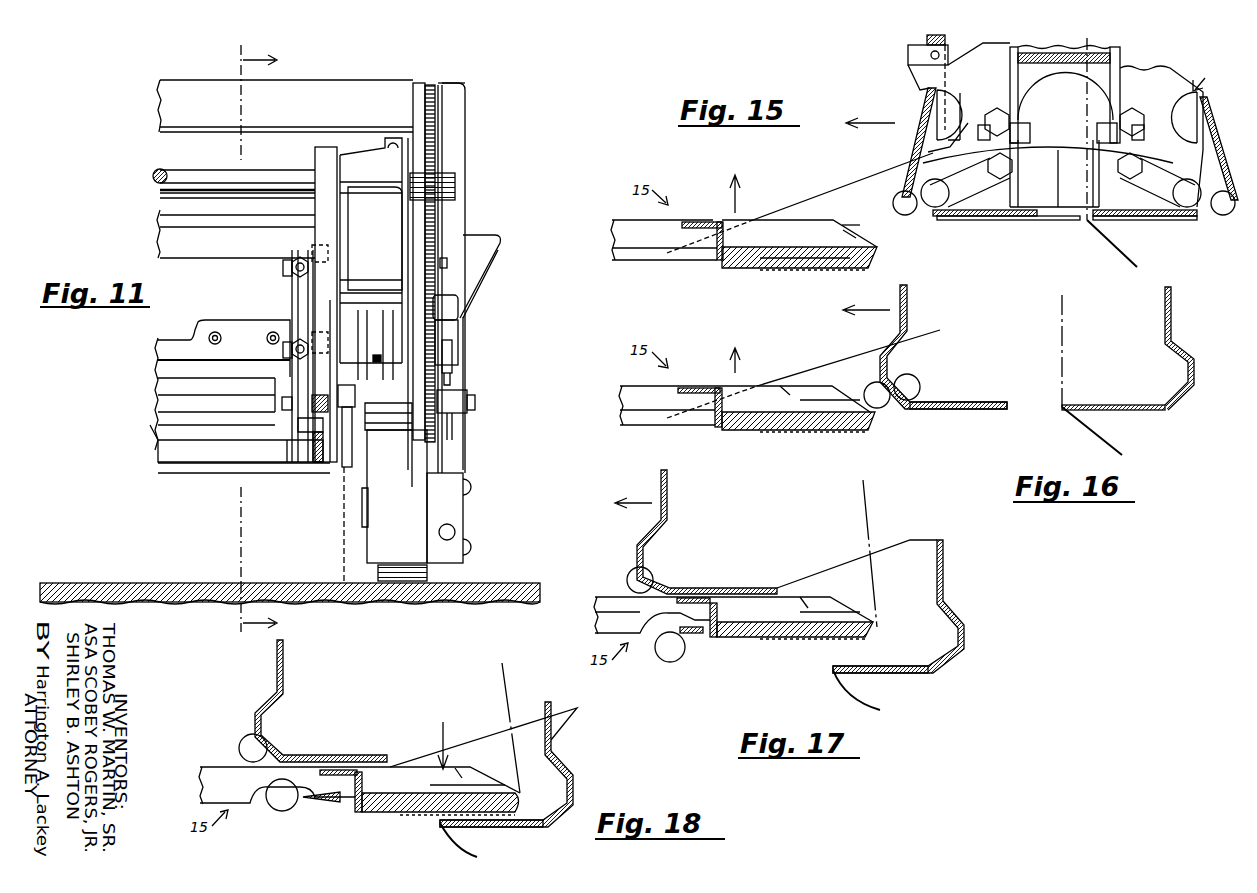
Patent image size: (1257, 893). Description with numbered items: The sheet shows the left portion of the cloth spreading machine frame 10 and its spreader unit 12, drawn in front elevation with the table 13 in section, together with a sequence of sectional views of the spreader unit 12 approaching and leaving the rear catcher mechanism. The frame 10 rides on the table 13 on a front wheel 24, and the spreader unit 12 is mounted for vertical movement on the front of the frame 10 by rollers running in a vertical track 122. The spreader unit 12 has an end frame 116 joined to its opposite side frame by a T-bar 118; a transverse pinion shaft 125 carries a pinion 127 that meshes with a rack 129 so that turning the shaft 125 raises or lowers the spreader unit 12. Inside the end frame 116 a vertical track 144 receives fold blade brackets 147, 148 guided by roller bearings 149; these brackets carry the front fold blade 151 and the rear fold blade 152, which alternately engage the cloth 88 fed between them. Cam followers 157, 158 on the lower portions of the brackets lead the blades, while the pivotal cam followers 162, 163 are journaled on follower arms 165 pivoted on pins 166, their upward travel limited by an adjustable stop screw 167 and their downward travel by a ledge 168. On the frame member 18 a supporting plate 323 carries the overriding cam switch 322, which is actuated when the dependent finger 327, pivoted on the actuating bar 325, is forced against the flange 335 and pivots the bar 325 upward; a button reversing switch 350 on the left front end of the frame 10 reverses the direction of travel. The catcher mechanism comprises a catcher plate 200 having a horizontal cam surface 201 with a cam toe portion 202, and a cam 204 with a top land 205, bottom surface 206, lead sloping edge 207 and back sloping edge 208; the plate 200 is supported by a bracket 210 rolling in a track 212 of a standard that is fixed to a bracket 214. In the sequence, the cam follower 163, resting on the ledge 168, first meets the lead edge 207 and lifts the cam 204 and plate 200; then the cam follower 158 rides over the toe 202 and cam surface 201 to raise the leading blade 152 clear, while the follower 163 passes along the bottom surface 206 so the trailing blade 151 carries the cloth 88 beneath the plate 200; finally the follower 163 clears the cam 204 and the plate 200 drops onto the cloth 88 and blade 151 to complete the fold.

In FIG. 11, the frame 10 is at (464, 125).
In FIG. 11, the spreader unit 12 is at (118, 395).
In FIG. 15, the spreader unit 12 is at (1212, 73).
In FIG. 11, the table 13 is at (100, 583).
In FIG. 11, the frame member 18 is at (455, 148).
In FIG. 11, the front wheel 24 is at (428, 574).
In FIG. 15, the cloth 88 is at (1112, 158).
In FIG. 16, the cloth 88 is at (1115, 440).
In FIG. 17, the cloth 88 is at (870, 530).
In FIG. 18, the cloth 88 is at (510, 690).
In FIG. 11, the end frame 116 is at (400, 266).
In FIG. 15, the end frame 116 is at (1110, 50).
In FIG. 11, the T-bar 118 is at (215, 256).
In FIG. 11, the vertical track 122 is at (419, 83).
In FIG. 11, the pinion shaft 125 is at (212, 162).
In FIG. 11, the pinion 127 is at (455, 178).
In FIG. 11, the rack 129 is at (425, 101).
In FIG. 11, the vertical track 144 is at (315, 153).
In FIG. 15, the vertical track 144 is at (1108, 105).
In FIG. 11, the fold blade bracket 147 is at (292, 296).
In FIG. 15, the fold blade bracket 147 is at (1176, 84).
In FIG. 15, the fold blade bracket 148 is at (1008, 84).
In FIG. 11, the roller bearings 149 is at (328, 250).
In FIG. 15, the roller bearings 149 is at (1097, 135).
In FIG. 11, the front fold blade 151 is at (160, 367).
In FIG. 15, the front fold blade 151 is at (1125, 222).
In FIG. 16, the front fold blade 151 is at (1108, 405).
In FIG. 17, the front fold blade 151 is at (892, 668).
In FIG. 18, the front fold blade 151 is at (510, 828).
In FIG. 15, the rear fold blade 152 is at (1012, 222).
In FIG. 16, the rear fold blade 152 is at (965, 404).
In FIG. 17, the rear fold blade 152 is at (695, 588).
In FIG. 18, the rear fold blade 152 is at (345, 740).
In FIG. 11, the cam follower 157 is at (312, 386).
In FIG. 15, the cam follower 157 is at (1222, 214).
In FIG. 15, the cam follower 158 is at (898, 214).
In FIG. 16, the cam follower 158 is at (888, 407).
In FIG. 17, the cam follower 158 is at (635, 568).
In FIG. 18, the cam follower 158 is at (245, 743).
In FIG. 11, the front cam follower 162 is at (292, 349).
In FIG. 15, the front cam follower 162 is at (1185, 207).
In FIG. 15, the rear cam follower 163 is at (930, 207).
In FIG. 16, the rear cam follower 163 is at (920, 380).
In FIG. 17, the rear cam follower 163 is at (660, 660).
In FIG. 18, the rear cam follower 163 is at (280, 810).
In FIG. 11, the follower arm 165 is at (368, 403).
In FIG. 15, the follower arm 165 is at (1062, 180).
In FIG. 11, the pin 166 is at (367, 417).
In FIG. 15, the pin 166 is at (1045, 150).
In FIG. 11, the adjustable stop screw 167 is at (383, 357).
In FIG. 15, the adjustable stop screw 167 is at (920, 150).
In FIG. 11, the ledge 168 is at (393, 420).
In FIG. 15, the ledge 168 is at (958, 218).
In FIG. 11, the catcher bar 200 is at (195, 473).
In FIG. 15, the catcher bar 200 is at (740, 262).
In FIG. 16, the catcher bar 200 is at (745, 430).
In FIG. 17, the catcher bar 200 is at (825, 640).
In FIG. 18, the catcher bar 200 is at (385, 812).
In FIG. 11, the horizontal cam surface 201 is at (236, 443).
In FIG. 15, the horizontal cam surface 201 is at (795, 220).
In FIG. 16, the horizontal cam surface 201 is at (722, 387).
In FIG. 17, the horizontal cam surface 201 is at (610, 600).
In FIG. 18, the horizontal cam surface 201 is at (228, 768).
In FIG. 11, the cam toe portion 202 is at (317, 435).
In FIG. 15, the cam toe portion 202 is at (878, 246).
In FIG. 16, the cam toe portion 202 is at (850, 395).
In FIG. 17, the cam toe portion 202 is at (860, 605).
In FIG. 18, the cam toe portion 202 is at (500, 780).
In FIG. 11, the cam 204 is at (347, 420).
In FIG. 15, the cam 204 is at (878, 210).
In FIG. 16, the cam 204 is at (800, 380).
In FIG. 17, the cam 204 is at (838, 578).
In FIG. 18, the cam 204 is at (495, 740).
In FIG. 15, the top horizontal land 205 is at (905, 160).
In FIG. 16, the top horizontal land 205 is at (925, 340).
In FIG. 17, the top horizontal land 205 is at (940, 538).
In FIG. 18, the top horizontal land 205 is at (587, 697).
In FIG. 15, the bottom surface 206 is at (688, 258).
In FIG. 16, the bottom surface 206 is at (690, 425).
In FIG. 17, the bottom surface 206 is at (693, 640).
In FIG. 18, the bottom surface 206 is at (320, 805).
In FIG. 15, the lead sloping edge 207 is at (870, 230).
In FIG. 16, the lead sloping edge 207 is at (915, 365).
In FIG. 17, the lead sloping edge 207 is at (910, 578).
In FIG. 18, the lead sloping edge 207 is at (568, 745).
In FIG. 15, the back sloping edge 208 is at (810, 218).
In FIG. 16, the back sloping edge 208 is at (832, 372).
In FIG. 17, the back sloping edge 208 is at (788, 595).
In FIG. 18, the back sloping edge 208 is at (415, 765).
In FIG. 15, the bracket 210 is at (628, 260).
In FIG. 16, the bracket 210 is at (636, 425).
In FIG. 17, the bracket 210 is at (602, 630).
In FIG. 18, the bracket 210 is at (215, 803).
In FIG. 11, the track 212 is at (333, 540).
In FIG. 11, the bracket 214 is at (210, 566).
In FIG. 11, the overriding cam switch 322 is at (468, 300).
In FIG. 11, the supporting plate 323 is at (462, 340).
In FIG. 11, the actuating bar 325 is at (455, 377).
In FIG. 11, the dependent finger 327 is at (456, 436).
In FIG. 11, the flange 335 is at (475, 397).
In FIG. 11, the button reversing switch 350 is at (455, 527).